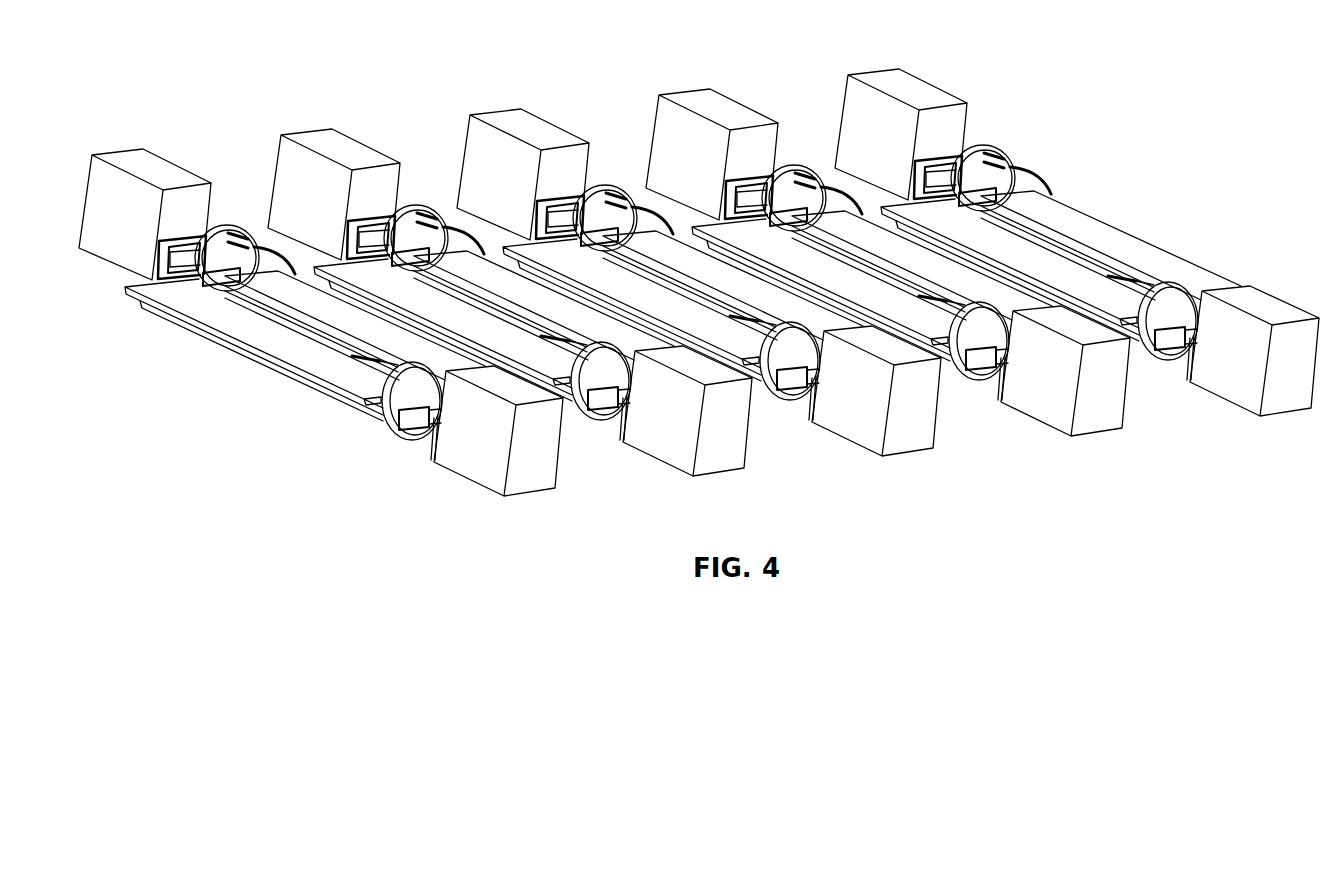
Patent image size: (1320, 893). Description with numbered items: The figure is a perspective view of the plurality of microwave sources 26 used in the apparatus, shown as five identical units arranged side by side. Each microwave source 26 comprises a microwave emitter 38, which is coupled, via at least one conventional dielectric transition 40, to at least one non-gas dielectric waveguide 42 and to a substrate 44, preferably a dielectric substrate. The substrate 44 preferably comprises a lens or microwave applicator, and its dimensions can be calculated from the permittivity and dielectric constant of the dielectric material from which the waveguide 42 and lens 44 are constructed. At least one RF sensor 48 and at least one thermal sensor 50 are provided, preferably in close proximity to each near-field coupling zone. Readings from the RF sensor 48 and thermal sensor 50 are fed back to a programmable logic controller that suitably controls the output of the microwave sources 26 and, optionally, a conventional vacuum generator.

The microwave source 26 is at (699, 284).
The microwave emitter 38 is at (480, 448).
The dielectric transition 40 is at (416, 438).
The non-gas dielectric waveguide 42 is at (302, 383).
The dielectric substrate 44 is at (187, 303).
The RF sensor 48 is at (1004, 176).
The thermal sensor 50 is at (1043, 184).